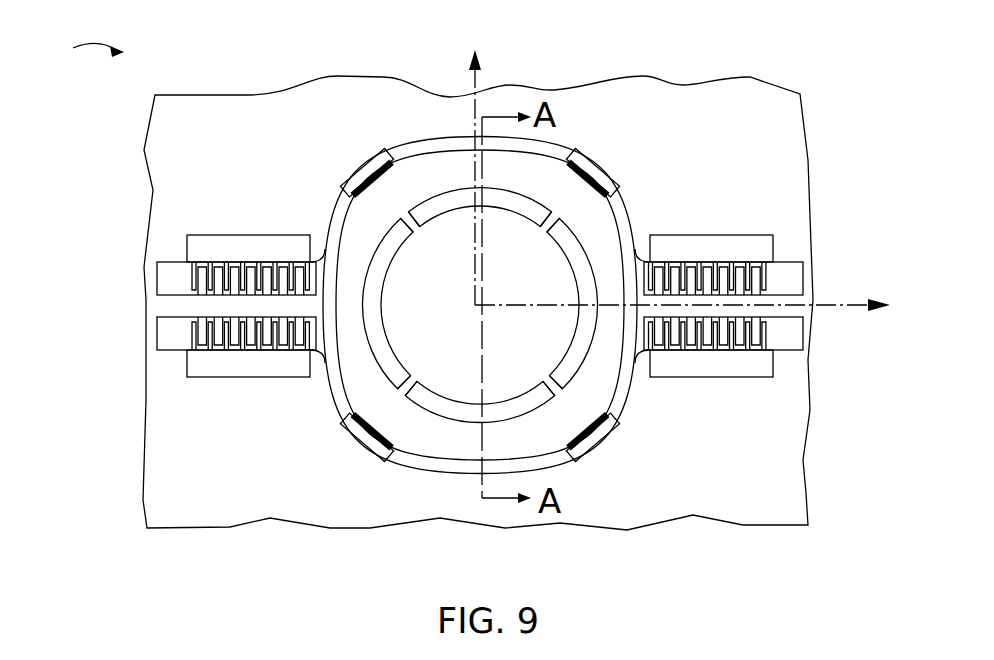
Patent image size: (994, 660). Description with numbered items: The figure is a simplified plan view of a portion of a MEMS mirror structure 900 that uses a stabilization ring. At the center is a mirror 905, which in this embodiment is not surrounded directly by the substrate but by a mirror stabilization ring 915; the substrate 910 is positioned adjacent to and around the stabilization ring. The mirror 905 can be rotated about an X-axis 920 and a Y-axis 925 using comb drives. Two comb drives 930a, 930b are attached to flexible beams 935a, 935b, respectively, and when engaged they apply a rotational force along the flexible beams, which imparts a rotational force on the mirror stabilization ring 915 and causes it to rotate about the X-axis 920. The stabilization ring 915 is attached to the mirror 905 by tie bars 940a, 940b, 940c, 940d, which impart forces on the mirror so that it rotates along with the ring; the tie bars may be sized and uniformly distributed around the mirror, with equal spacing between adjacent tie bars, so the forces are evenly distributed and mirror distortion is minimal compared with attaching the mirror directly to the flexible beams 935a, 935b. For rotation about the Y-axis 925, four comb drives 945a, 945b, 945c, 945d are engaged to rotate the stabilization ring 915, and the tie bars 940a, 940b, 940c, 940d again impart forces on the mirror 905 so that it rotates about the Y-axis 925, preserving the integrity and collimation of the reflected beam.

The MEMS mirror structure 900 is at (78, 51).
The mirror 905 is at (450, 322).
The substrate 910 is at (745, 151).
The mirror stabilization ring 915 is at (595, 380).
The X-axis 920 is at (840, 307).
The Y-axis 925 is at (477, 80).
The comb drive 930a is at (225, 270).
The comb drive 930b is at (680, 268).
The flexible beam 935a is at (242, 308).
The flexible beam 935b is at (745, 300).
The tie bar 940a is at (403, 217).
The tie bar 940b is at (548, 217).
The tie bar 940c is at (405, 393).
The tie bar 940d is at (553, 395).
The comb drive 945a is at (363, 180).
The comb drive 945b is at (595, 172).
The comb drive 945c is at (355, 432).
The comb drive 945d is at (605, 432).